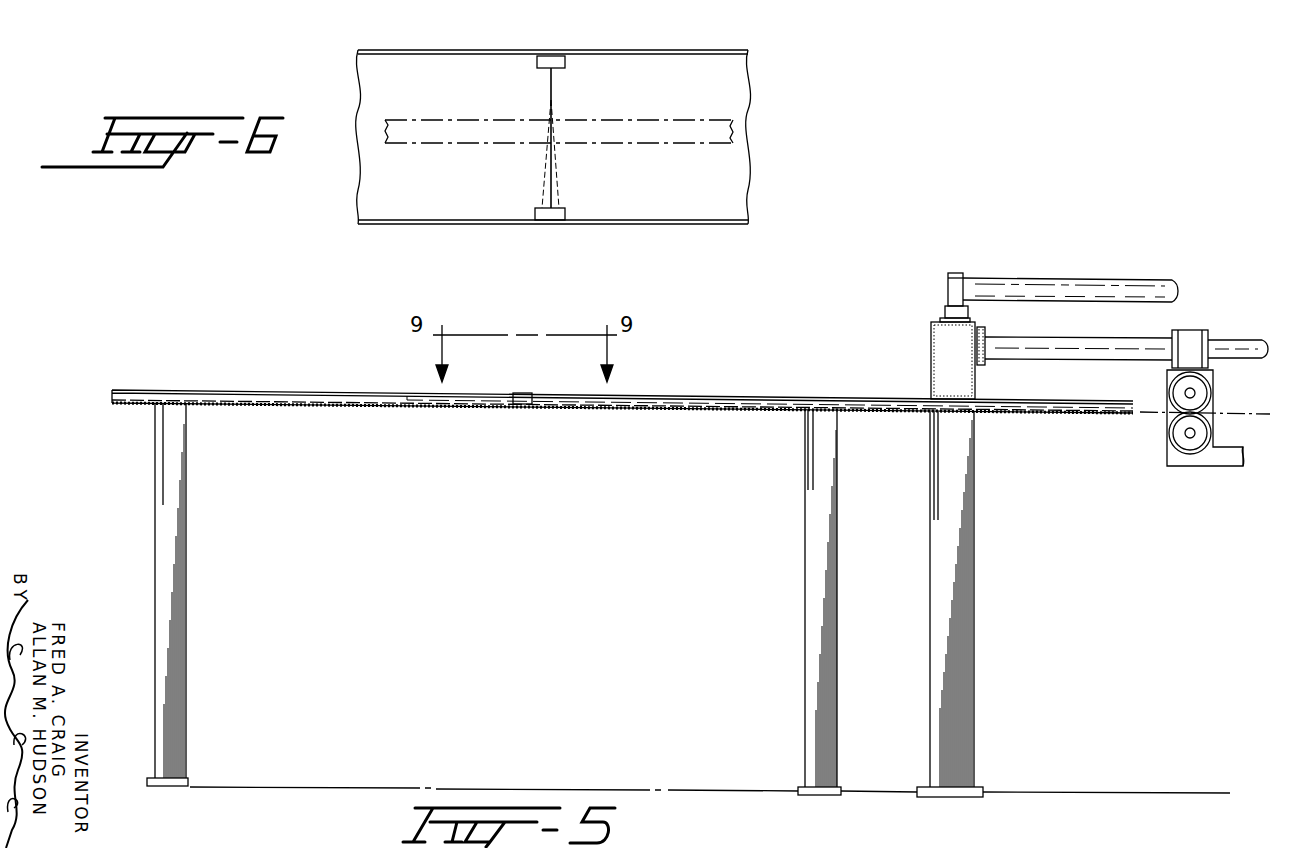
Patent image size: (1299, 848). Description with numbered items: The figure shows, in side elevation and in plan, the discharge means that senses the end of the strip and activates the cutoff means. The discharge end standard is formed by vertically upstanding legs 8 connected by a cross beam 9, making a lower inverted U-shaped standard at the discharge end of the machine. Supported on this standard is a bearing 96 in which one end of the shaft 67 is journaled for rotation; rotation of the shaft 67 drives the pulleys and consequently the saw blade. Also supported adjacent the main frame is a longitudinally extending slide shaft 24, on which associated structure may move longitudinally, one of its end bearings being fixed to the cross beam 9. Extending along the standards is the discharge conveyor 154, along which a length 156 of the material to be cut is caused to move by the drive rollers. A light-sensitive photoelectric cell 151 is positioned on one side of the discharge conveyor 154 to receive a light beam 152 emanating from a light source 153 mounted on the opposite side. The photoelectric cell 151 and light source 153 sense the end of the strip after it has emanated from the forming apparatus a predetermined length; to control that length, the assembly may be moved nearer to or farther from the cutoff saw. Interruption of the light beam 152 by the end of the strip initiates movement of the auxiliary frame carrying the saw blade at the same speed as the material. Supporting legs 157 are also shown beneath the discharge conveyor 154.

In FIG. 5, the vertically upstanding legs 8 is at (975, 575).
In FIG. 5, the cross beam 9 is at (931, 353).
In FIG. 5, the slide shaft 24 is at (1093, 360).
In FIG. 5, the shaft 67 is at (1093, 280).
In FIG. 5, the bearing 96 is at (956, 273).
In FIG. 6, the light-sensitive photoelectric cell 151 is at (553, 220).
In FIG. 5, the light-sensitive photoelectric cell 151 is at (523, 393).
In FIG. 6, the light beam 152 is at (553, 106).
In FIG. 6, the light source 153 is at (553, 57).
In FIG. 6, the discharge conveyor 154 is at (680, 224).
In FIG. 5, the discharge conveyor 154 is at (665, 410).
In FIG. 6, the length of material to be cut 156 is at (683, 128).
In FIG. 5, the leg 157 is at (188, 576).